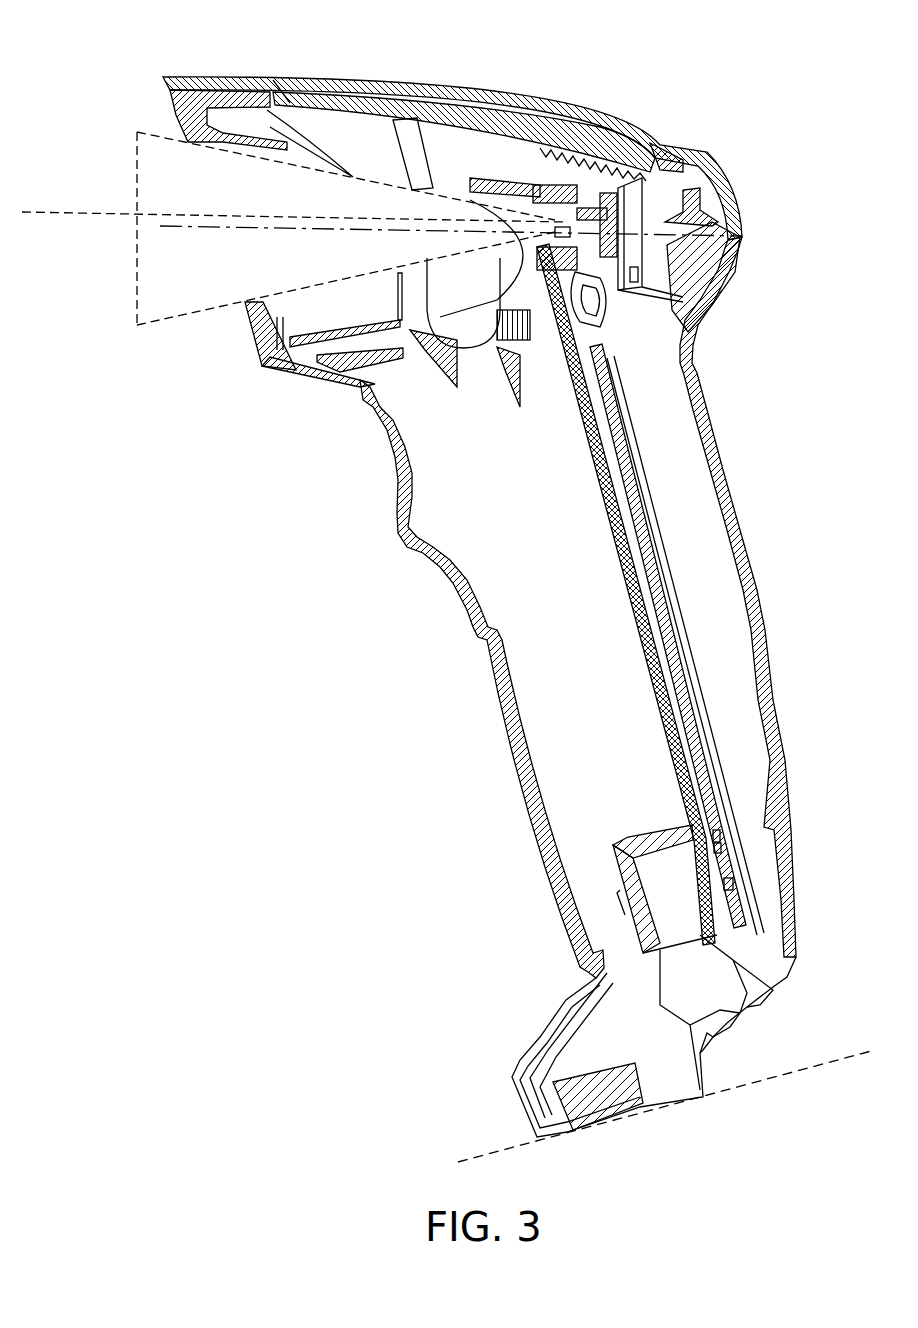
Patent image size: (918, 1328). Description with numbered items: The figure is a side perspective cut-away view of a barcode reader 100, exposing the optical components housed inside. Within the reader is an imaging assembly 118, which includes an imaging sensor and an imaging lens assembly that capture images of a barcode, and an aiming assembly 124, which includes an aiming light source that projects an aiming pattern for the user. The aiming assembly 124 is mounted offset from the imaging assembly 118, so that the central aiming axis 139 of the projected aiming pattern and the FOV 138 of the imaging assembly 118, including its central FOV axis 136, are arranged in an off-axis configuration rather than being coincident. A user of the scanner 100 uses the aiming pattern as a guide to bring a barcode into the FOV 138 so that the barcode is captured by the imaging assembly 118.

The barcode reader 100 is at (768, 52).
The imaging assembly 118 is at (565, 228).
The aiming assembly 124 is at (590, 198).
The central FOV axis 136 is at (248, 230).
The FOV 138 is at (147, 262).
The central aiming axis 139 is at (105, 211).